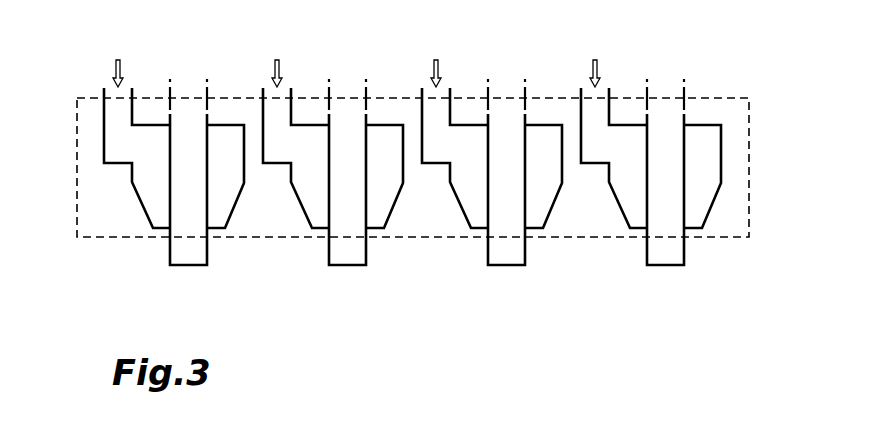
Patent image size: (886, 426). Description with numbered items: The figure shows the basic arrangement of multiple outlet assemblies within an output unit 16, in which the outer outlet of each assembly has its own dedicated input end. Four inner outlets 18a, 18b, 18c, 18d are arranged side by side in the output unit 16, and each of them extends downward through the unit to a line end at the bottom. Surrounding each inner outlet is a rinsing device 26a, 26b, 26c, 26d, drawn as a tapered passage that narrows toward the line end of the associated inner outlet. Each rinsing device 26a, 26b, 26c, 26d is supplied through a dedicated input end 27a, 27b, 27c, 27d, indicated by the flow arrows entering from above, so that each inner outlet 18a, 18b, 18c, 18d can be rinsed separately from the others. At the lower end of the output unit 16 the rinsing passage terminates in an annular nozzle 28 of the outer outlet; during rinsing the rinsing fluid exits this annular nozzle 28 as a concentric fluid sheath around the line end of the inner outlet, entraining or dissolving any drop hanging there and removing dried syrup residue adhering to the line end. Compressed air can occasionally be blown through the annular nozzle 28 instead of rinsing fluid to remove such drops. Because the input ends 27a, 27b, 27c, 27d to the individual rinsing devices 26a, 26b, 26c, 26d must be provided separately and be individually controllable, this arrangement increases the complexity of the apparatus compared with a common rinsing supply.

The output unit 16 is at (750, 167).
The inner outlet 18a is at (205, 282).
The inner outlet 18b is at (364, 282).
The inner outlet 18c is at (514, 282).
The inner outlet 18d is at (682, 282).
The rinsing device 26a is at (141, 202).
The rinsing device 26b is at (300, 202).
The rinsing device 26c is at (459, 202).
The rinsing device 26d is at (618, 202).
The input end 27a is at (98, 70).
The input end 27b is at (256, 71).
The input end 27c is at (416, 70).
The input end 27d is at (574, 70).
The annular nozzle 28 is at (707, 239).